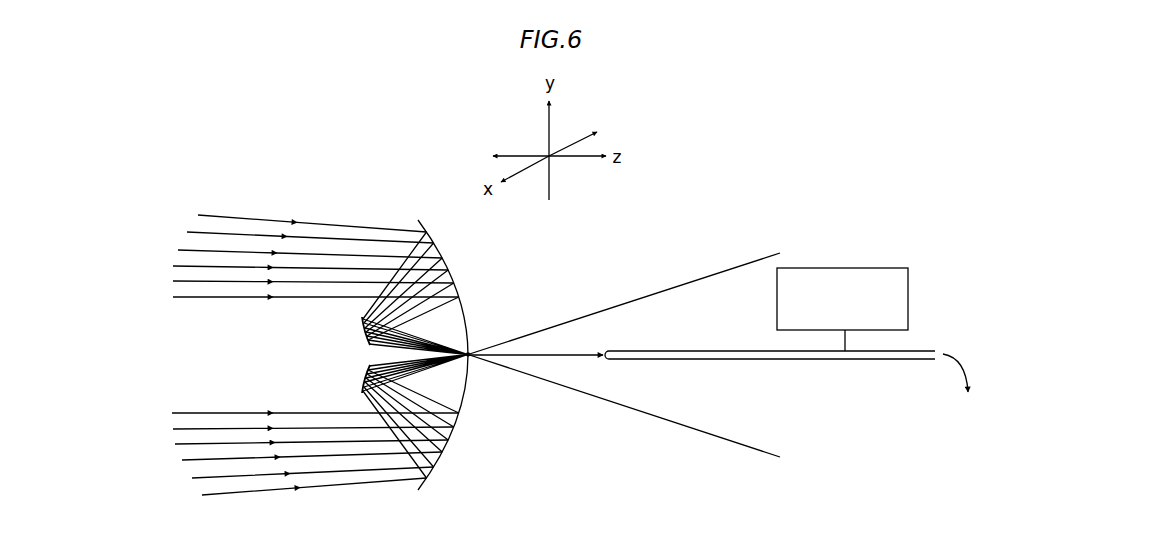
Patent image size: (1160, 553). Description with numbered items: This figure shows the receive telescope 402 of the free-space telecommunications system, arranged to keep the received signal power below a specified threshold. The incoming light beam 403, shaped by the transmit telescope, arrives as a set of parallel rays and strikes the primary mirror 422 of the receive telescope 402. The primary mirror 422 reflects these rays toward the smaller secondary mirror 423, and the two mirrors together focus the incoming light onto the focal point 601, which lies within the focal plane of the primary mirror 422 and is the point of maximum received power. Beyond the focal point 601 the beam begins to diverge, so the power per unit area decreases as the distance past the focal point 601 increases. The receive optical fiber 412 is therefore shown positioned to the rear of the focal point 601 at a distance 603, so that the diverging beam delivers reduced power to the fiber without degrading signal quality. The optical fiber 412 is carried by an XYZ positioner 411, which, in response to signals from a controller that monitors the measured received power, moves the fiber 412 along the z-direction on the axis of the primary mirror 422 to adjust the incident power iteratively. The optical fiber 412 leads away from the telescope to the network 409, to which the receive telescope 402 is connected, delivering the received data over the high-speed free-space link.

The receive telescope 402 is at (425, 366).
The beam 403 is at (345, 226).
The network 409 is at (972, 408).
The XYZ positioner 411 is at (910, 268).
The optical fiber 412 is at (719, 362).
The primary mirror 422 is at (451, 261).
The secondary mirror 423 is at (366, 348).
The focal point 601 is at (476, 346).
The distance 603 is at (580, 353).